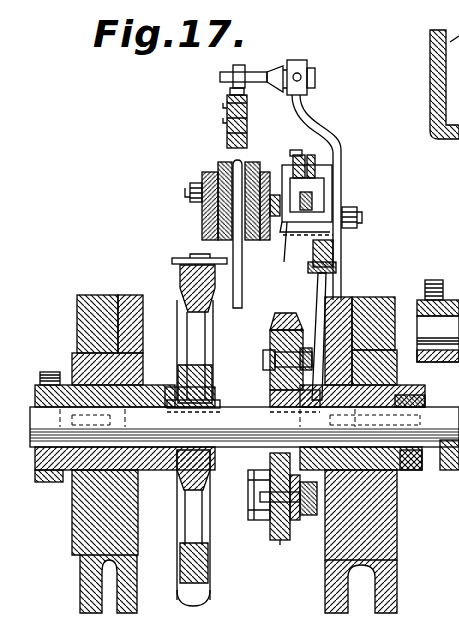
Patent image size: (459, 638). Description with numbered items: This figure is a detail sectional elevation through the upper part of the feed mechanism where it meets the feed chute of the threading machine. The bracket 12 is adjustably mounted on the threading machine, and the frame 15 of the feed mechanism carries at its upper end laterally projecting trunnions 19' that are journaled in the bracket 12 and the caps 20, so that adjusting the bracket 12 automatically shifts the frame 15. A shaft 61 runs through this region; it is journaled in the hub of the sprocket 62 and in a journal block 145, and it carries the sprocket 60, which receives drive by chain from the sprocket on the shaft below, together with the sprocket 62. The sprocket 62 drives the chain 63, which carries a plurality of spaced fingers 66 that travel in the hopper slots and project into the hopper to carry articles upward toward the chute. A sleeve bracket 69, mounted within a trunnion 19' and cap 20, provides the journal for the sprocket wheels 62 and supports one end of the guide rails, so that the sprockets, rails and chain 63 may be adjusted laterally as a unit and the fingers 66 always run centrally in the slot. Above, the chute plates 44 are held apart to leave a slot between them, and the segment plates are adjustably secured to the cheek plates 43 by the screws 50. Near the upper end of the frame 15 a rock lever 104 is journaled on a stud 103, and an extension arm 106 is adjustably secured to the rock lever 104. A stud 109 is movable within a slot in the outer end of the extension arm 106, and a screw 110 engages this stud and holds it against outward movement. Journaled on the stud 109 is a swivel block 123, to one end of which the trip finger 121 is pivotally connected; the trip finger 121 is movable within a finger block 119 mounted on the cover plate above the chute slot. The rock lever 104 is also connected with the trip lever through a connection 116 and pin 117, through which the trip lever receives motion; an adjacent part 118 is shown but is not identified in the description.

The bracket 12 is at (92, 592).
The frame 15 is at (140, 562).
The trunnions 19' is at (244, 380).
The caps 20 is at (92, 302).
The cheek plate 43 is at (205, 226).
The chute plates 44 is at (232, 167).
The screws 50 is at (190, 190).
The sprocket 60 is at (281, 541).
The shaft 61 is at (239, 420).
The sprocket 62 is at (208, 584).
The chain 63 is at (178, 262).
The fingers 66 is at (240, 160).
The sleeve bracket 69 is at (153, 392).
The stud 103 is at (250, 505).
The rock lever 104 is at (302, 304).
The extension arm 106 is at (326, 112).
The stud 109 is at (221, 77).
The screw 110 is at (299, 72).
The connection 116 is at (318, 160).
The pin 117 is at (310, 152).
The bracket 118 is at (326, 184).
The finger block 119 is at (250, 130).
The trip finger 121 is at (230, 92).
The swivel block 123 is at (244, 66).
The journal block 145 is at (405, 468).